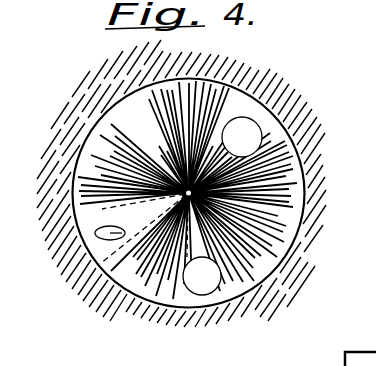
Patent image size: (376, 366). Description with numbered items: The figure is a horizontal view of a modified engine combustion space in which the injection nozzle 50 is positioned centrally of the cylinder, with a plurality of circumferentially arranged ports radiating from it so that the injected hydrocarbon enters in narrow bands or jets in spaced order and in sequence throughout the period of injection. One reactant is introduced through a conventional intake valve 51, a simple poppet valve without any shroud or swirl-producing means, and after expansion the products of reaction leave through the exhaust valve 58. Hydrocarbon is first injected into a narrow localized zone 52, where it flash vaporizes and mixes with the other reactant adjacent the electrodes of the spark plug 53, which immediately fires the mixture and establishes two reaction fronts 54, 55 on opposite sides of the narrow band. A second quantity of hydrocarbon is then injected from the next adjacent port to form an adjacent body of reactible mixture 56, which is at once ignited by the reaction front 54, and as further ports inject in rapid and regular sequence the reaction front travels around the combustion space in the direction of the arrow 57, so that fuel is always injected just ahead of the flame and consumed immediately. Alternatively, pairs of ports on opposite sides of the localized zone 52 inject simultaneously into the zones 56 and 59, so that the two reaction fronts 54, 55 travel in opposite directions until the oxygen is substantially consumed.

The injection nozzle 50 is at (210, 201).
The intake valve 51 is at (262, 140).
The localized zone 52 is at (98, 264).
The spark plug 53 is at (96, 238).
The reaction front 54 is at (120, 208).
The reaction front 55 is at (111, 265).
The adjacent body of reactible mixture 56 is at (130, 172).
The arrow 57 is at (177, 125).
The exhaust valve 58 is at (213, 291).
The zone 59 is at (141, 298).